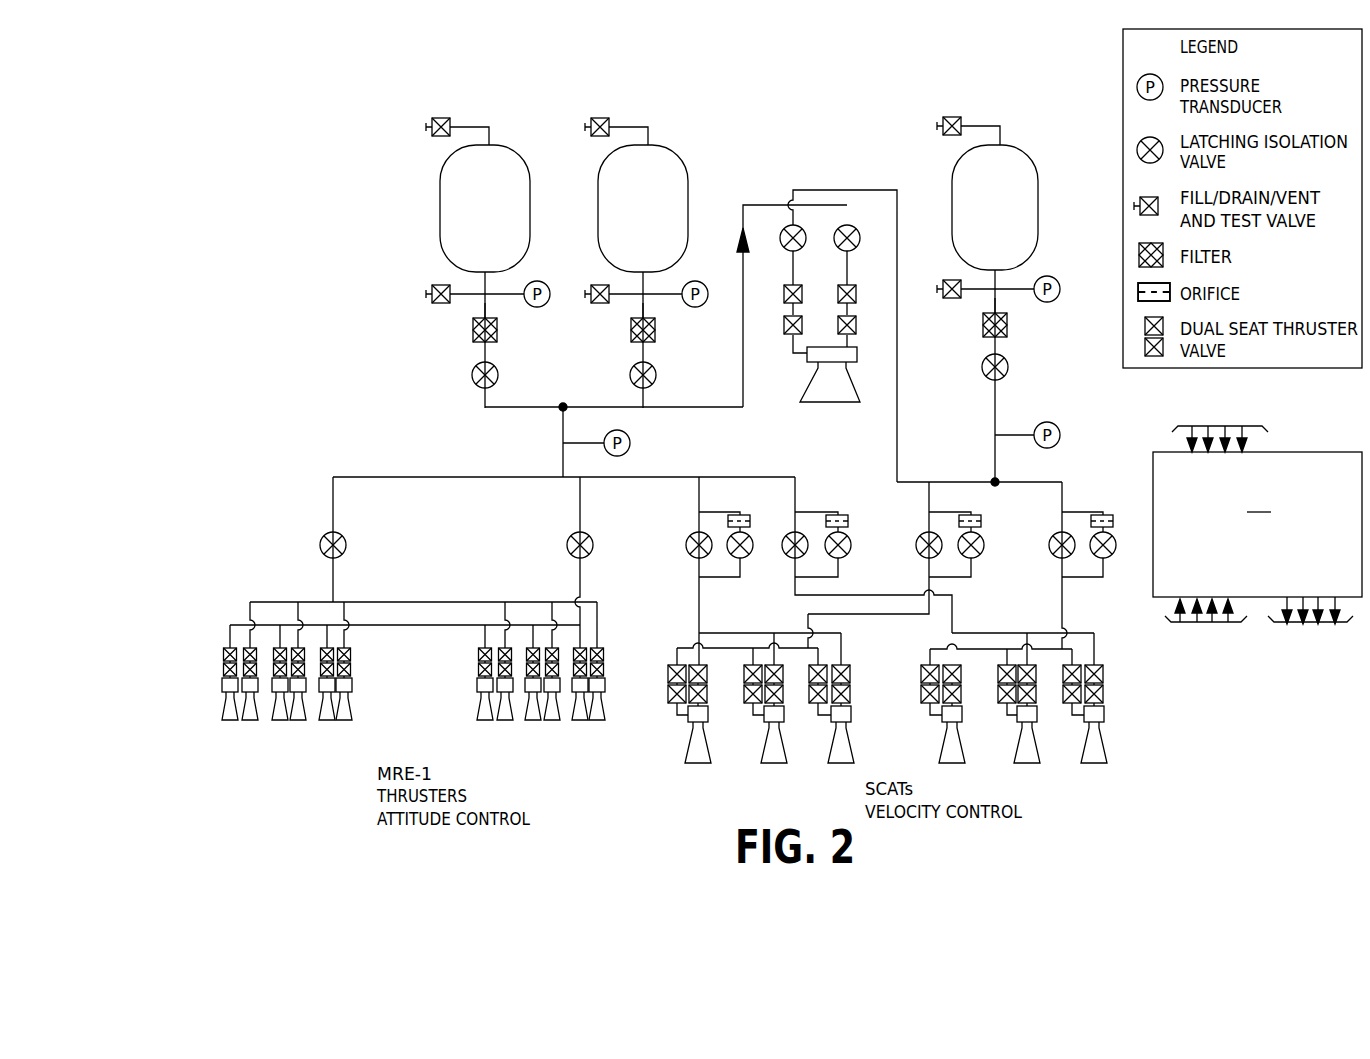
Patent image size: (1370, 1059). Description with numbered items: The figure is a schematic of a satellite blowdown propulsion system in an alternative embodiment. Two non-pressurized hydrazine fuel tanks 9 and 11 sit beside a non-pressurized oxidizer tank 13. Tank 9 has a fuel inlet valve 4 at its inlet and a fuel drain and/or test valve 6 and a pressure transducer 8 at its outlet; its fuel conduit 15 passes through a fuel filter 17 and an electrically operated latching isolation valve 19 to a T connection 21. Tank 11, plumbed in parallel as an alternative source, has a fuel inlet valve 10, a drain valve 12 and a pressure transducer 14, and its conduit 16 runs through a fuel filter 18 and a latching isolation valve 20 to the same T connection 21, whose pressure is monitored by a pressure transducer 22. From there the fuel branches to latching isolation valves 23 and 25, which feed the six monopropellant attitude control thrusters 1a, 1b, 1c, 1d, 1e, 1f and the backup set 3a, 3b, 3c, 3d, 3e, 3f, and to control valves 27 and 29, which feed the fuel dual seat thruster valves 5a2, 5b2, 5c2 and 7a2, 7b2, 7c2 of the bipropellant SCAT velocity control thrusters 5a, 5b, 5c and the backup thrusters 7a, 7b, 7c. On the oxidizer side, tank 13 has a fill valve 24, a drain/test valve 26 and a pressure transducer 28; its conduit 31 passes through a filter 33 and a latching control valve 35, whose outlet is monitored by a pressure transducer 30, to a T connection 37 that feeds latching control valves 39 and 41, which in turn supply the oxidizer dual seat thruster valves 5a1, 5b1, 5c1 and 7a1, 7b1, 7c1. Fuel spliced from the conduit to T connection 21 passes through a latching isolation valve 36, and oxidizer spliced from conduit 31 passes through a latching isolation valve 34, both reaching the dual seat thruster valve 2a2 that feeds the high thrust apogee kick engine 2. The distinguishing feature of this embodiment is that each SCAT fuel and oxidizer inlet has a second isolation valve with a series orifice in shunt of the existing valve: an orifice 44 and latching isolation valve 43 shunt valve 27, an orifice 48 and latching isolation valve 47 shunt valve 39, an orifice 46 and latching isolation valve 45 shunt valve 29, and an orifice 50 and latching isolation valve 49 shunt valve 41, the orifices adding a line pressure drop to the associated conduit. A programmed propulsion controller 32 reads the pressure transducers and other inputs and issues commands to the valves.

The apogee kick engine 2 is at (812, 372).
The dual seat thruster valve 2a2 is at (786, 290).
The fuel inlet valve 4 is at (447, 118).
The fuel drain and/or test valve 6 is at (440, 285).
The pressure transducer 8 is at (545, 303).
The propellant fuel tank 9 is at (440, 185).
The fuel inlet valve 10 is at (604, 118).
The fuel tank 11 is at (690, 185).
The drain valve 12 is at (600, 285).
The propellant oxidizer tank 13 is at (1020, 145).
The pressure transducer 14 is at (697, 281).
The fuel conduit 15 is at (480, 305).
The conduit 16 is at (648, 303).
The fuel filter 17 is at (499, 332).
The fuel filter 18 is at (630, 335).
The latching isolation valve 19 is at (498, 375).
The latching isolation valve 20 is at (656, 375).
The T connection 21 is at (553, 414).
The pressure transducer 22 is at (631, 444).
The latching isolation valve 23 is at (347, 546).
The fill valve 24 is at (957, 117).
The latching isolation valve 25 is at (594, 546).
The drain/test valve 26 is at (945, 299).
The control valve 27 is at (690, 552).
The pressure transducer 28 is at (1052, 276).
The control valve 29 is at (790, 534).
The pressure transducer 30 is at (1052, 422).
The conduit 31 is at (990, 298).
The controller 32 is at (1257, 536).
The filter 33 is at (1007, 327).
The latching isolation valve 34 is at (782, 237).
The latching control valve 35 is at (1010, 372).
The latching isolation valve 36 is at (853, 228).
The T connection 37 is at (1000, 479).
The latching control valve 39 is at (917, 540).
The latching control valve 41 is at (1050, 538).
The latching isolation valve 43 is at (744, 558).
The orifice 44 is at (742, 514).
The latching isolation valve 45 is at (843, 558).
The orifice 46 is at (840, 514).
The latching isolation valve 47 is at (975, 558).
The orifice 48 is at (971, 514).
The latching isolation valve 49 is at (1107, 558).
The orifice 50 is at (1103, 514).
The monopropellant thruster 1a is at (222, 702).
The monopropellant thruster 1b is at (280, 722).
The monopropellant thruster 1c is at (327, 722).
The monopropellant thruster 1d is at (478, 706).
The monopropellant thruster 1e is at (533, 722).
The monopropellant thruster 1f is at (580, 722).
The monopropellant thruster 3a is at (250, 722).
The monopropellant thruster 3b is at (298, 722).
The monopropellant thruster 3c is at (344, 722).
The monopropellant thruster 3d is at (505, 722).
The monopropellant thruster 3e is at (552, 722).
The monopropellant thruster 3f is at (600, 722).
The bipropellant SCAT thruster 5a is at (708, 749).
The bipropellant SCAT thruster 5b is at (784, 749).
The bipropellant SCAT thruster 5c is at (851, 749).
The oxidizer dual seat thruster valve 5a1 is at (668, 673).
The fuel dual seat thruster valve 5a2 is at (707, 673).
The oxidizer dual seat thruster valve 5b1 is at (748, 700).
The fuel dual seat thruster valve 5b2 is at (780, 665).
The oxidizer dual seat thruster valve 5c1 is at (815, 700).
The fuel dual seat thruster valve 5c2 is at (851, 673).
The bipropellant SCAT thruster 7a is at (962, 750).
The bipropellant SCAT thruster 7b is at (1037, 750).
The bipropellant SCAT thruster 7c is at (1105, 750).
The oxidizer dual seat thruster valve 7a1 is at (928, 700).
The fuel dual seat thruster valve 7a2 is at (960, 665).
The oxidizer dual seat thruster valve 7b1 is at (1004, 700).
The fuel dual seat thruster valve 7b2 is at (1034, 665).
The oxidizer dual seat thruster valve 7c1 is at (1068, 700).
The fuel dual seat thruster valve 7c2 is at (1103, 673).